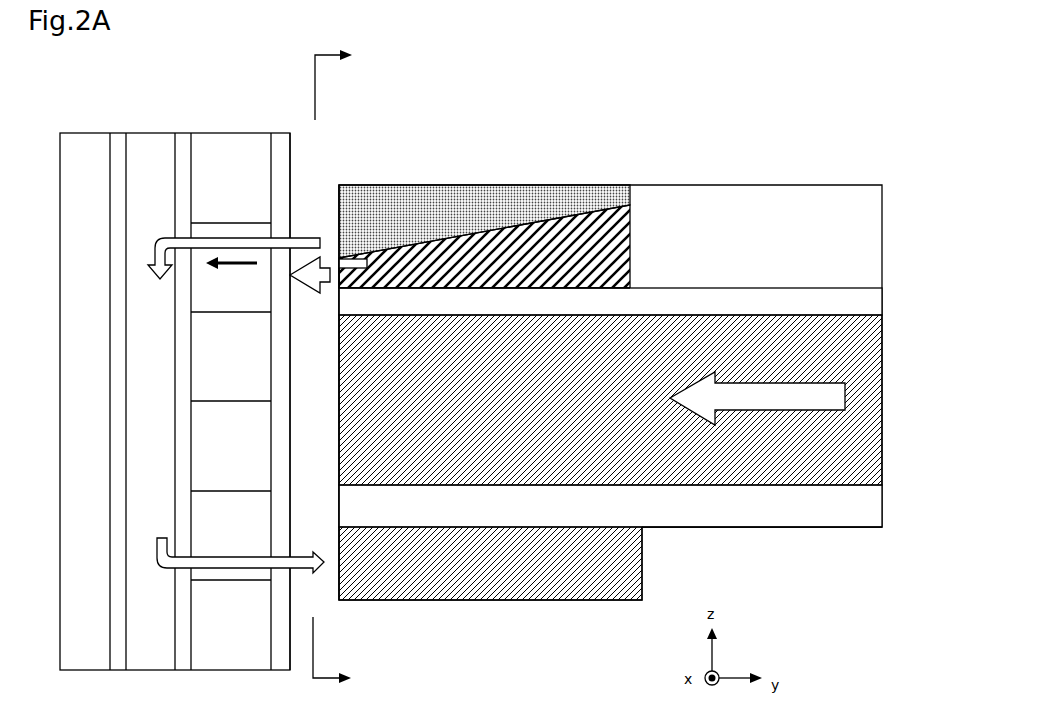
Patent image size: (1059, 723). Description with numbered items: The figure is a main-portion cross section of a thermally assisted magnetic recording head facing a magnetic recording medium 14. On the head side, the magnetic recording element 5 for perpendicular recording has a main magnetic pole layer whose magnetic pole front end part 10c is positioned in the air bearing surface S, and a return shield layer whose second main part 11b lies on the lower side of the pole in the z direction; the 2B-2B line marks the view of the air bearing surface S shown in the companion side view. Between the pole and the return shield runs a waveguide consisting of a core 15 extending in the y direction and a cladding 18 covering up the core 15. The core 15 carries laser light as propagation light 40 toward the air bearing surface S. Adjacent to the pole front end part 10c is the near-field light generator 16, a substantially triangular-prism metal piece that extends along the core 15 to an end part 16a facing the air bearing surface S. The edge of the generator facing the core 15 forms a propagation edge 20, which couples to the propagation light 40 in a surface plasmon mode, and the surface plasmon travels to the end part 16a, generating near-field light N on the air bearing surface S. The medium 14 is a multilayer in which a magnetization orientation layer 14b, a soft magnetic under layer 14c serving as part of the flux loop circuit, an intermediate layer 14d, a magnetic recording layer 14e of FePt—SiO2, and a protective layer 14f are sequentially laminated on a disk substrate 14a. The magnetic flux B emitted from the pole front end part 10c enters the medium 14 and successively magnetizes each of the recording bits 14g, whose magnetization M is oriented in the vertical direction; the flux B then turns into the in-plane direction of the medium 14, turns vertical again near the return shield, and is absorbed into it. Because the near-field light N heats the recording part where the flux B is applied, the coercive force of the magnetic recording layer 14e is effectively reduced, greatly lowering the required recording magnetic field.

The magnetic recording element 5 is at (716, 166).
The magnetic pole front end part 10c is at (521, 195).
The second main part 11b is at (401, 601).
The magnetic recording medium 14 is at (290, 90).
The disk substrate 14a is at (76, 132).
The magnetization orientation layer 14b is at (120, 132).
The soft magnetic under layer 14c is at (152, 132).
The intermediate layer 14d is at (187, 132).
The magnetic recording layer 14e is at (235, 132).
The protective layer 14f is at (285, 132).
The recording bits 14g is at (231, 385).
The core 15 is at (760, 486).
The near-field light generator 16 is at (600, 210).
The end part 16a is at (337, 286).
The cladding 18 is at (355, 262).
The propagation edge 20 is at (563, 289).
The propagation light 40 is at (770, 395).
The air bearing surface S is at (337, 205).
The magnetic flux B is at (162, 236).
The magnetization of recording bits M is at (233, 273).
The near-field light N is at (310, 275).
The 2B-2B line 2B is at (353, 368).